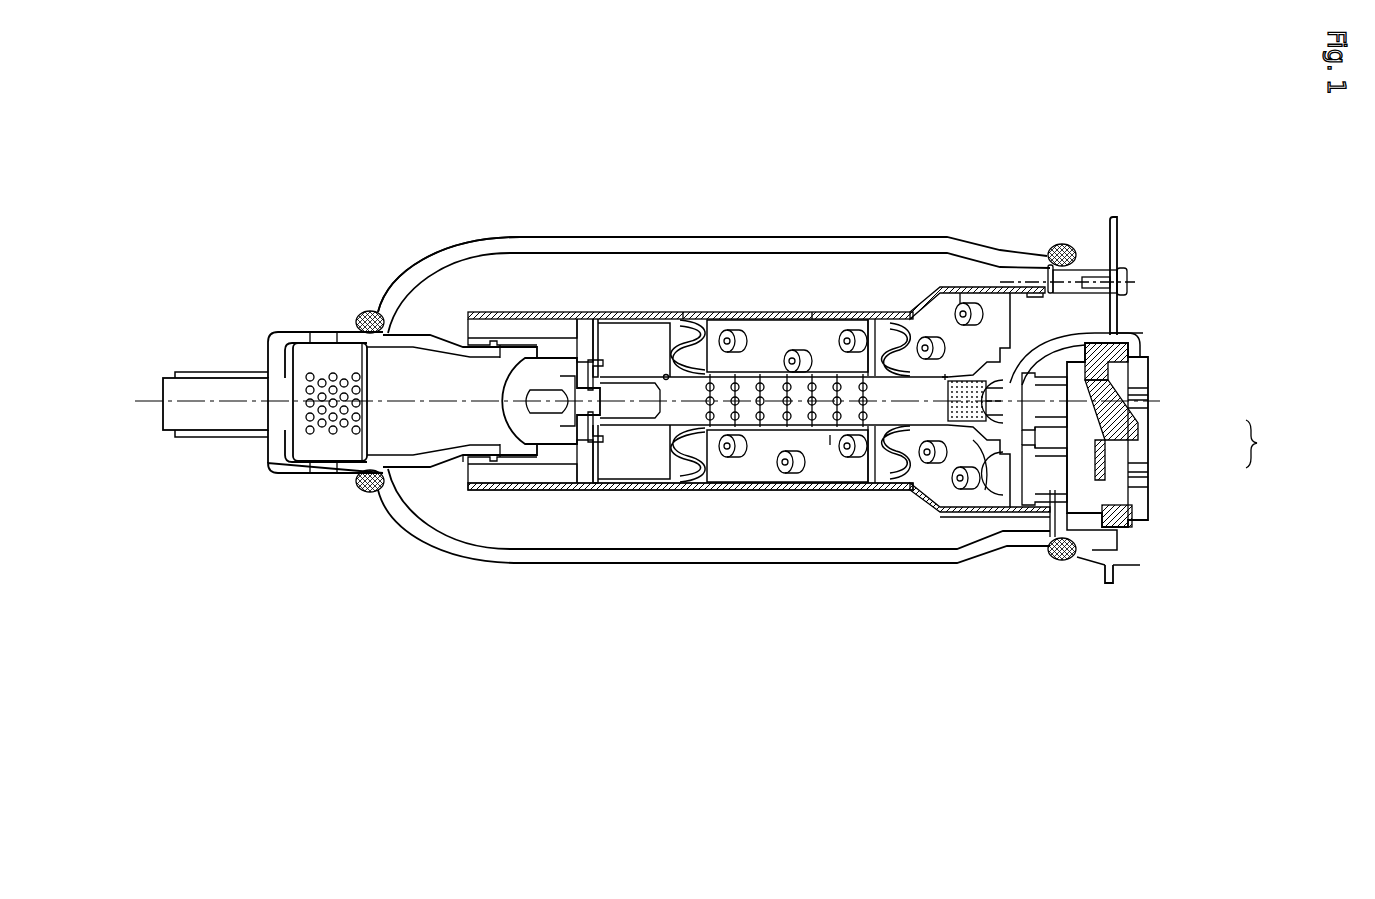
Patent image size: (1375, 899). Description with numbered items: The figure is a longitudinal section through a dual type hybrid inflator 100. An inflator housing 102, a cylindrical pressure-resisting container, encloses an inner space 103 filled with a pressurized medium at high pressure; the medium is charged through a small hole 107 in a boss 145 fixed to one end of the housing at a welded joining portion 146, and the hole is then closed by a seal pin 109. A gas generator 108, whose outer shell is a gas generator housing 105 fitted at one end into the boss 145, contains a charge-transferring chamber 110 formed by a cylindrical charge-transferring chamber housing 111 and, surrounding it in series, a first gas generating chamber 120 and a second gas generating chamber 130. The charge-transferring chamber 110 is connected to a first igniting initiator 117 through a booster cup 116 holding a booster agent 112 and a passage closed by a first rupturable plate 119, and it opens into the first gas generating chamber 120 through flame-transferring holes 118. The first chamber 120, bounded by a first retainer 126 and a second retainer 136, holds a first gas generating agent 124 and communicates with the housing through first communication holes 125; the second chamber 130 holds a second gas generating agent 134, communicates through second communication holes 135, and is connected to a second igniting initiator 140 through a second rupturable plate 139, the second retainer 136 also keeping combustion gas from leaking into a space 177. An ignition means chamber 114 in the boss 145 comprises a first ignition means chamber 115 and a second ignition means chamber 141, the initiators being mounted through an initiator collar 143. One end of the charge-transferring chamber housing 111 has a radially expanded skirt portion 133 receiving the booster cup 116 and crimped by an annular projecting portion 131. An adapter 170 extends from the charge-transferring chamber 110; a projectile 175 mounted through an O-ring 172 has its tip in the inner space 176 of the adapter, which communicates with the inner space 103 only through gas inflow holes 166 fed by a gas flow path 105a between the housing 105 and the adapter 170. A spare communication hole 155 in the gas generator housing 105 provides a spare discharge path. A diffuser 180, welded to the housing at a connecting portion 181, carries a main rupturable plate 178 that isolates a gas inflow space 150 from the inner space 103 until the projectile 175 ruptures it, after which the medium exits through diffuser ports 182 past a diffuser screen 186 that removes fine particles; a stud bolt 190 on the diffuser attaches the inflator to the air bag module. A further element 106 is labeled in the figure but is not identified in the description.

The hybrid inflator 100 is at (706, 222).
The inflator housing 102 is at (590, 564).
The inner space 103 is at (531, 293).
The gas generator housing 105 is at (877, 311).
The gas flow path 105a is at (526, 337).
The housing end wall 106 is at (446, 265).
The small hole 107 is at (1048, 264).
The gas generator 108 is at (812, 300).
The seal pin 109 is at (1128, 280).
The charge-transferring chamber 110 is at (922, 408).
The charge-transferring chamber housing 111 is at (838, 478).
The booster agent 112 is at (926, 300).
The ignition means chamber 114 is at (1272, 444).
The first ignition means chamber 115 is at (1150, 406).
The booster cup 116 is at (992, 392).
The first igniting initiator 117 is at (1130, 345).
The flame-transferring holes 118 is at (716, 440).
The first rupturable plate 119 is at (1115, 333).
The first gas generating chamber 120 is at (789, 349).
The first gas generating agent 124 is at (793, 476).
The first communication holes 125 is at (748, 311).
The first retainer 126 is at (683, 312).
The second gas generating chamber 130 is at (987, 357).
The annular projecting portion 131 is at (972, 440).
The skirt portion 133 is at (948, 495).
The second gas generating agent 134 is at (975, 312).
The second communication holes 135 is at (958, 292).
The second retainer 136 is at (925, 513).
The second rupturable plate 139 is at (1022, 490).
The second igniting initiator 140 is at (1064, 562).
The second ignition means chamber 141 is at (1150, 480).
The initiator collar 143 is at (1148, 543).
The boss 145 is at (1110, 250).
The joining portion 146 is at (1062, 244).
The gas inflow space 150 is at (421, 391).
The spare communication hole 155 is at (614, 491).
The gas inflow holes 166 is at (553, 338).
The adapter 170 is at (527, 458).
The O-ring 172 is at (600, 372).
The projectile 175 is at (592, 470).
The inner space 176 is at (564, 385).
The space 177 is at (656, 470).
The main rupturable plate 178 is at (466, 458).
The diffuser 180 is at (293, 497).
The connecting portion 181 is at (360, 316).
The diffuser port 182 is at (318, 490).
The diffuser screen 186 is at (307, 388).
The stud bolt 190 is at (168, 440).